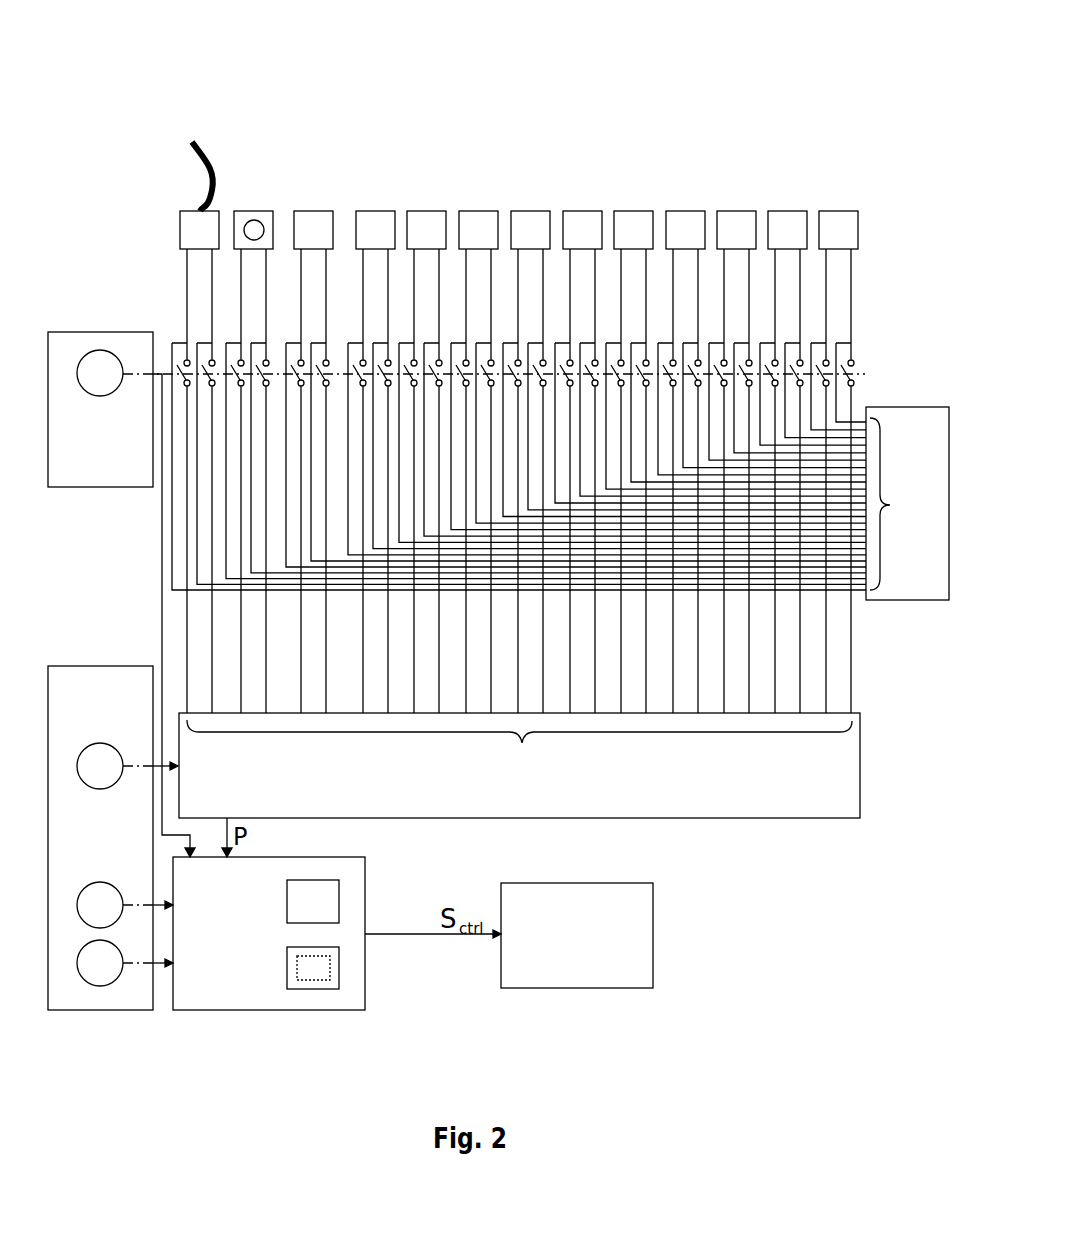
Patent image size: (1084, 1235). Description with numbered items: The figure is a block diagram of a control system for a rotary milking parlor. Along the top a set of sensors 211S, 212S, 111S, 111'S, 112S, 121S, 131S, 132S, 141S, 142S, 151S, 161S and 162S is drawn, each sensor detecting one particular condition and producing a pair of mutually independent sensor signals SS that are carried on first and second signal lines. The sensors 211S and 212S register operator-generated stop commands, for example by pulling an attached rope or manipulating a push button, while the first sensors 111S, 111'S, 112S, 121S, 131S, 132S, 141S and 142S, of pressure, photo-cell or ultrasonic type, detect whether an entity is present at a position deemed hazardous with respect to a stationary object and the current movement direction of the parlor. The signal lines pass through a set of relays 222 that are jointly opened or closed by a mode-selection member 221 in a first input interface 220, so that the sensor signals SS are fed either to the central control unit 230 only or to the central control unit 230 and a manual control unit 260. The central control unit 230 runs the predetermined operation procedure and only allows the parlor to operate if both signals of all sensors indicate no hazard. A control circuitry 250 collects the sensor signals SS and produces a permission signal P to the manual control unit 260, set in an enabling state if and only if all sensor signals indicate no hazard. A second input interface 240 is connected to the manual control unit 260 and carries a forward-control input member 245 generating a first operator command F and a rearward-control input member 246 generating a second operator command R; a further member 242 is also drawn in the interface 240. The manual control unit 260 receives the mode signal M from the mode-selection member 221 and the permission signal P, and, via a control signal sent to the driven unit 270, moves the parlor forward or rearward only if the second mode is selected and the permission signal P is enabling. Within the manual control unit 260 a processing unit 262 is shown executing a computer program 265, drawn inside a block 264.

The sensor 211S is at (192, 211).
The sensor 212S is at (250, 211).
The first sensor 111S is at (327, 211).
The first sensor 111'S is at (321, 161).
The first sensor 112S is at (425, 211).
The first sensor 121S is at (478, 211).
The first sensor 131S is at (530, 211).
The first sensor 132S is at (582, 211).
The first sensor 141S is at (633, 211).
The first sensor 142S is at (685, 211).
The sensor 151S is at (737, 211).
The sensor 161S is at (788, 211).
The sensor 162S is at (843, 211).
The first input interface 220 is at (100, 373).
The mode-selection member 221 is at (115, 378).
The set of relays 222 is at (863, 370).
The central control unit 230 is at (880, 407).
The second input interface 240 is at (99, 841).
The signal source 242 is at (117, 760).
The forward-control input member 245 is at (117, 898).
The rearward-control input member 246 is at (117, 970).
The control circuitry 250 is at (863, 763).
The manual control unit 260 is at (310, 966).
The processing unit 262 is at (315, 900).
The processor 264 is at (315, 989).
The computer program 265 is at (317, 967).
The actuator 270 is at (654, 932).